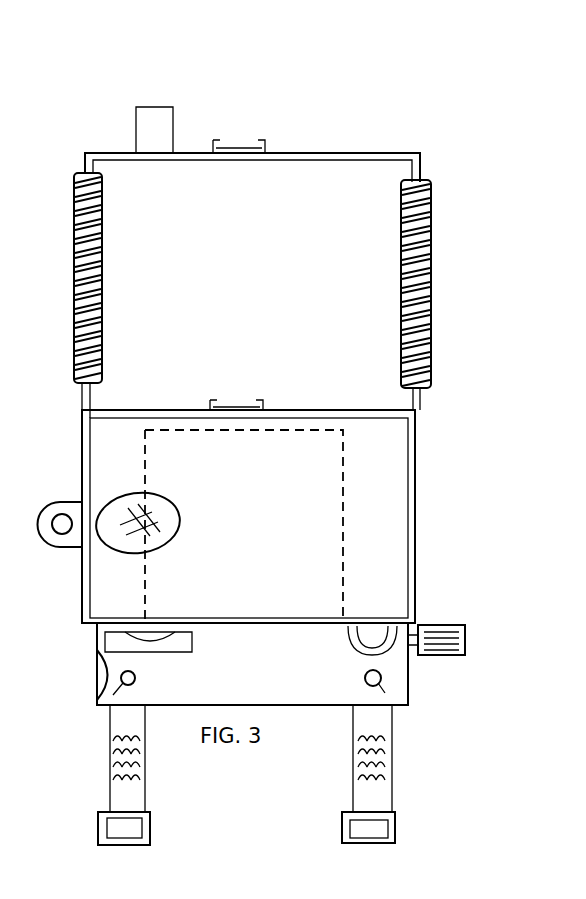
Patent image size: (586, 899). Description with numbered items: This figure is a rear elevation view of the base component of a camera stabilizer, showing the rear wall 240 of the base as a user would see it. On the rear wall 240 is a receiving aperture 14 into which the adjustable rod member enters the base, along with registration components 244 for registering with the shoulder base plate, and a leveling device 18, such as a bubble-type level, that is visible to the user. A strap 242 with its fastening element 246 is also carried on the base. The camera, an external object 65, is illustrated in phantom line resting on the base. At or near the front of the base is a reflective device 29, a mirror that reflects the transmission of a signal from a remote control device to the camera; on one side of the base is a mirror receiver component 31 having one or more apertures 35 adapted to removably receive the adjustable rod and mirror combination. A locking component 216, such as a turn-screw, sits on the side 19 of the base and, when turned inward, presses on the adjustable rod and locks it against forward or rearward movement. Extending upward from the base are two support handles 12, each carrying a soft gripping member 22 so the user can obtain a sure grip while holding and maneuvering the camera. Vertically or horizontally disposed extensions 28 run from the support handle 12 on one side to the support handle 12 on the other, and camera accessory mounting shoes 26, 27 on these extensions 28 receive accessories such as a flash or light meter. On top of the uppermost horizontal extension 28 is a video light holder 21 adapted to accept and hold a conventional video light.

The support handle 12 is at (80, 425).
The receiving aperture 14 is at (412, 620).
The leveling device 18 is at (98, 668).
The side 19 is at (410, 683).
The video light holder 21 is at (148, 107).
The gripping member 22 is at (104, 280).
The camera accessory mounting shoe 26 is at (265, 402).
The camera accessory mounting shoe 27 is at (268, 147).
The extension 28 is at (395, 150).
The reflective device 29 is at (125, 495).
The mirror receiver component 31 is at (62, 550).
The aperture 35 is at (52, 505).
The external object 65 is at (258, 551).
The locking component 216 is at (467, 640).
The rear wall 240 is at (280, 668).
The strap 242 is at (108, 800).
The registration components 244 is at (122, 686).
The fastening element 246 is at (350, 765).